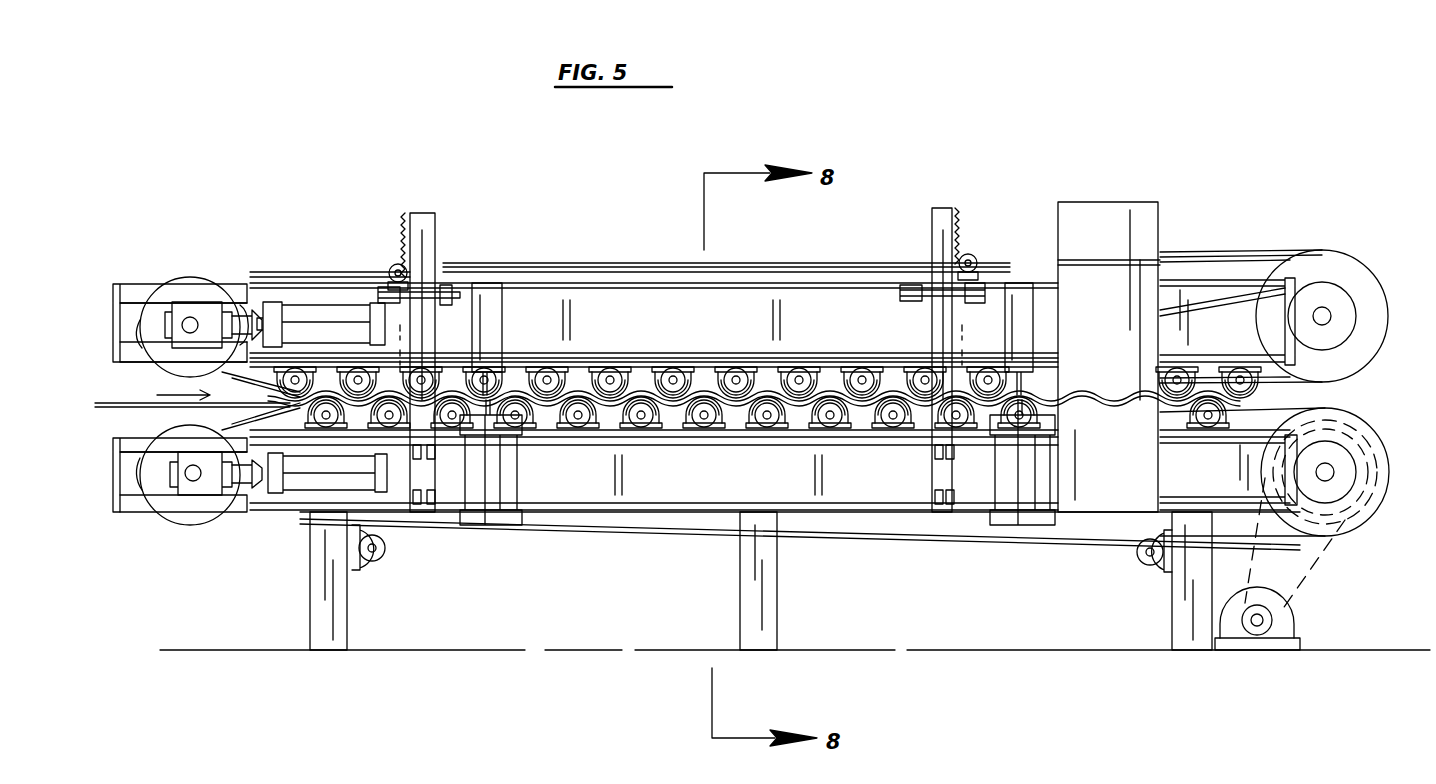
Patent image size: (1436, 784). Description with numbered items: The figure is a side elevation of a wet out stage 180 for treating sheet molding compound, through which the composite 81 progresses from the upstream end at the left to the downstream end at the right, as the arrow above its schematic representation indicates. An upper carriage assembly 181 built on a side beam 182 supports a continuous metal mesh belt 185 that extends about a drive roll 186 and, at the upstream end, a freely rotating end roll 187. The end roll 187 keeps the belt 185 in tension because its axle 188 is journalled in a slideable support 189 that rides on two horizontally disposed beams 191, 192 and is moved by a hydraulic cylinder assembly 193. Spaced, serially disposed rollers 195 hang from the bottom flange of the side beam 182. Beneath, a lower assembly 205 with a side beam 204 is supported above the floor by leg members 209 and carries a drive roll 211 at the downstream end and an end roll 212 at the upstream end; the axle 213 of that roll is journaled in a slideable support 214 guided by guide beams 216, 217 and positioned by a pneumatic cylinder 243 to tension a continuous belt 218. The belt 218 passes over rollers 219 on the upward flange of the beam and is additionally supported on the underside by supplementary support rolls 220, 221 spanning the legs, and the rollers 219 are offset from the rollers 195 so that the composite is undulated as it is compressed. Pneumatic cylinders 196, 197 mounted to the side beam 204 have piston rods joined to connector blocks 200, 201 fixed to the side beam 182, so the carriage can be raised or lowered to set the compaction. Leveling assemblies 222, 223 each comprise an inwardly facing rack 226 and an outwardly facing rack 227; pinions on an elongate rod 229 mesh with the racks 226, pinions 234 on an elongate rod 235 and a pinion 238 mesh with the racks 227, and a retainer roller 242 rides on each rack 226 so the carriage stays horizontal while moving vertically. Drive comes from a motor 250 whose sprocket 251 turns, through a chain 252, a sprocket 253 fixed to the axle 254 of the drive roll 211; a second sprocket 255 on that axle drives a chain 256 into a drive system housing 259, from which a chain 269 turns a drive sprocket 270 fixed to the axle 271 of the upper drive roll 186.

The wet out stage 180 is at (1078, 130).
The upper carriage assembly 181 is at (603, 250).
The side beam 182 is at (752, 300).
The continuous belt 185 is at (1227, 252).
The drive roll 186 is at (1365, 274).
The end roll 187 is at (188, 284).
The axle 188 is at (184, 304).
The slideable support 189 is at (193, 302).
The horizontally disposed beam 191 is at (125, 292).
The horizontally disposed beam 192 is at (125, 352).
The hydraulic cylinder assembly 193 is at (305, 314).
The rollers 195 is at (640, 374).
The pneumatic cylinder 196 is at (488, 526).
The pneumatic cylinder 197 is at (1018, 526).
The connector block 200 is at (488, 296).
The connector block 201 is at (1018, 284).
The side beam 204 is at (655, 490).
The lower assembly 205 is at (898, 548).
The leg members 209 is at (340, 614).
The drive roll 211 is at (1378, 500).
The end roll 212 is at (192, 522).
The axle 213 is at (190, 480).
The slideable support 214 is at (190, 490).
The guide beam 216 is at (125, 436).
The guide beam 217 is at (125, 505).
The continuous belt 218 is at (826, 532).
The rollers 219 is at (548, 420).
The supplementary support roll 220 is at (375, 548).
The supplementary support roll 221 is at (1143, 560).
The leveling assembly 222 is at (443, 184).
The leveling assembly 223 is at (945, 196).
The rack 226 is at (430, 214).
The rack 227 is at (406, 218).
The elongate rod 229 is at (636, 266).
The pinion 234 is at (397, 262).
The elongate rod 235 is at (390, 270).
The pinion 238 is at (968, 256).
The roller 242 is at (426, 302).
The pneumatic cylinder 243 is at (310, 478).
The motor 250 is at (1297, 640).
The sprocket 251 is at (1286, 612).
The chain 252 is at (1310, 566).
The sprocket 253 is at (1370, 466).
The axle 254 is at (1325, 466).
The sprocket 255 is at (1358, 455).
The chain 256 is at (1240, 455).
The drive system housing 259 is at (1118, 204).
The chain 269 is at (1210, 302).
The drive sprocket 270 is at (1356, 320).
The axle 271 is at (1322, 308).
The composite 81 is at (102, 404).